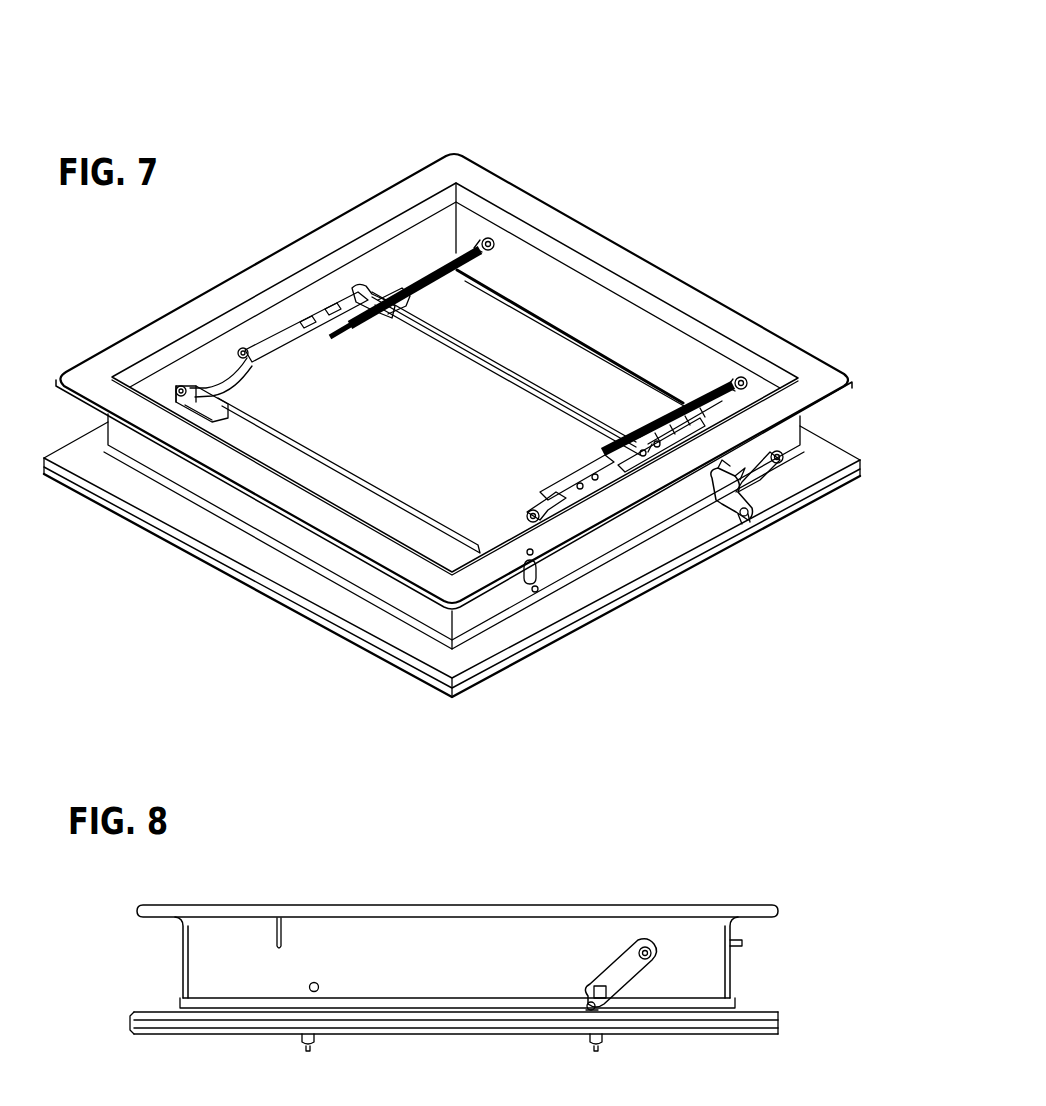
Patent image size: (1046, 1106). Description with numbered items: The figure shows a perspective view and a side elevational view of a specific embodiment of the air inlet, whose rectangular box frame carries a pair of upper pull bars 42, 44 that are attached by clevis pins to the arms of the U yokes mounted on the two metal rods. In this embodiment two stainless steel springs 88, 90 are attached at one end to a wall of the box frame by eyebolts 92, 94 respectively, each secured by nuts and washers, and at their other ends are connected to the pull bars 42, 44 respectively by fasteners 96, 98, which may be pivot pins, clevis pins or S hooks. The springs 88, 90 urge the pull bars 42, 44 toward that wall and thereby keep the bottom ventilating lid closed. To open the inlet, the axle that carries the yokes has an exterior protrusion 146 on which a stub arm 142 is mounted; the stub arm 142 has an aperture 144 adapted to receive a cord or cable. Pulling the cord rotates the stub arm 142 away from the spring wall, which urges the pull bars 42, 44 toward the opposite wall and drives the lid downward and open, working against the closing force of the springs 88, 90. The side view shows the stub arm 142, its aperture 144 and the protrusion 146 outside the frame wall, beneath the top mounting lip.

In FIG. 7, the upper pull bar 42 is at (278, 362).
In FIG. 7, the upper pull bar 44 is at (570, 478).
In FIG. 7, the spring 88 is at (458, 246).
In FIG. 7, the spring 90 is at (681, 405).
In FIG. 7, the eyebolt 92 is at (490, 236).
In FIG. 7, the eyebolt 94 is at (744, 378).
In FIG. 7, the fastener 96 is at (366, 320).
In FIG. 7, the fastener 98 is at (600, 450).
In FIG. 7, the stub arm 142 is at (774, 488).
In FIG. 8, the stub arm 142 is at (634, 978).
In FIG. 7, the aperture 144 is at (779, 458).
In FIG. 8, the aperture 144 is at (652, 954).
In FIG. 7, the exterior protrusion 146 is at (747, 513).
In FIG. 8, the exterior protrusion 146 is at (594, 1007).